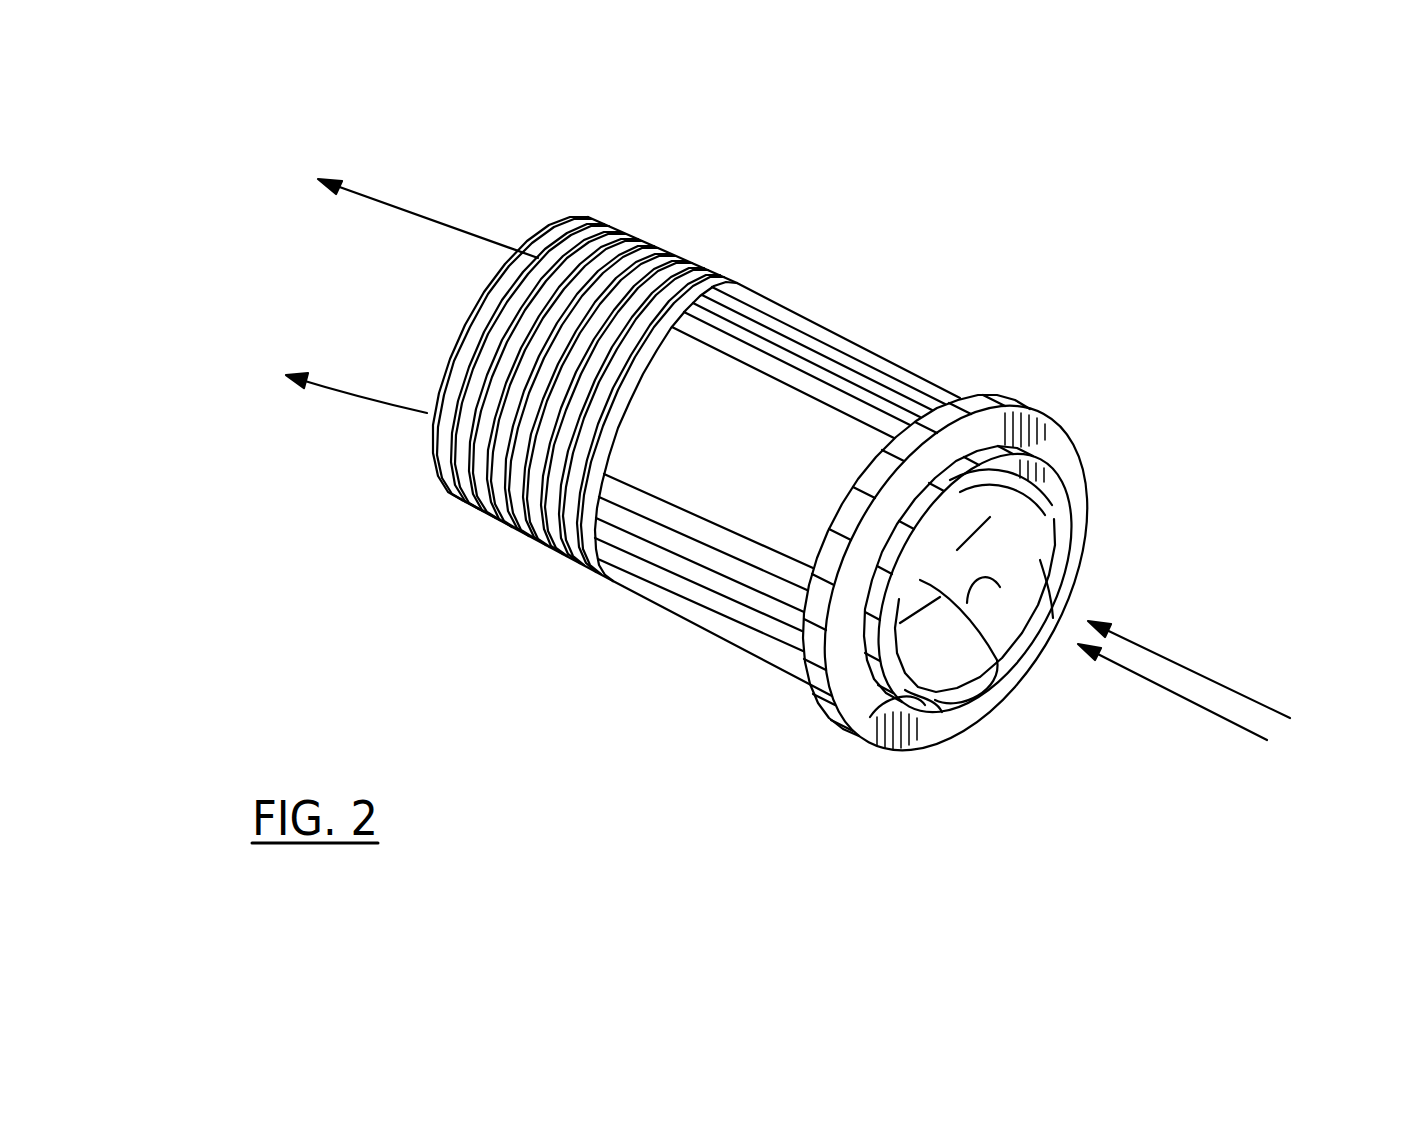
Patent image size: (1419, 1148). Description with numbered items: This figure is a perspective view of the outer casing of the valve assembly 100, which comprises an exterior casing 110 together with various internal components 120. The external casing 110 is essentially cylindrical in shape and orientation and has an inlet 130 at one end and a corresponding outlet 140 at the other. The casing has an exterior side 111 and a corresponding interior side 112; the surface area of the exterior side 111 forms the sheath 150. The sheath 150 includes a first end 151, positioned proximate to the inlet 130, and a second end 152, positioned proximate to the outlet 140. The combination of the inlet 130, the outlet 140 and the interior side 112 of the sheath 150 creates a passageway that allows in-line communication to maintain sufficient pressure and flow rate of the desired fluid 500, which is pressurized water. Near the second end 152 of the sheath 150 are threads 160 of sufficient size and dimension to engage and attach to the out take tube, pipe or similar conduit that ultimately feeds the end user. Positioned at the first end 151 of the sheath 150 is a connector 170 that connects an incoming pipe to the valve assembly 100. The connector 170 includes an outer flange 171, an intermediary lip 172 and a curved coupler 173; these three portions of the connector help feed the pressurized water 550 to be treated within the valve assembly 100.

The valve assembly 100 is at (902, 245).
The exterior casing 110 is at (920, 358).
The exterior side 111 is at (717, 620).
The interior side 112 is at (1062, 512).
The internal components 120 is at (993, 687).
The inlet 130 is at (1003, 570).
The outlet 140 is at (447, 357).
The sheath 150 is at (715, 462).
The first end 151 is at (950, 387).
The second end 152 is at (620, 217).
The threads 160 is at (470, 500).
The connector 170 is at (920, 700).
The outer flange 171 is at (1066, 452).
The intermediary lip 172 is at (880, 717).
The curved coupler 173 is at (1053, 618).
The desired fluid 500 is at (805, 443).
The pressurized water 550 is at (747, 577).